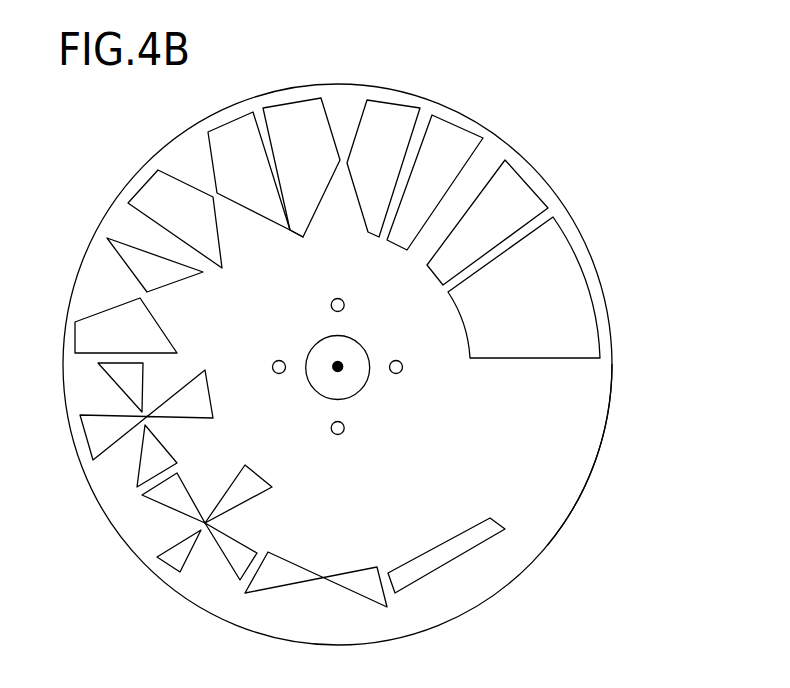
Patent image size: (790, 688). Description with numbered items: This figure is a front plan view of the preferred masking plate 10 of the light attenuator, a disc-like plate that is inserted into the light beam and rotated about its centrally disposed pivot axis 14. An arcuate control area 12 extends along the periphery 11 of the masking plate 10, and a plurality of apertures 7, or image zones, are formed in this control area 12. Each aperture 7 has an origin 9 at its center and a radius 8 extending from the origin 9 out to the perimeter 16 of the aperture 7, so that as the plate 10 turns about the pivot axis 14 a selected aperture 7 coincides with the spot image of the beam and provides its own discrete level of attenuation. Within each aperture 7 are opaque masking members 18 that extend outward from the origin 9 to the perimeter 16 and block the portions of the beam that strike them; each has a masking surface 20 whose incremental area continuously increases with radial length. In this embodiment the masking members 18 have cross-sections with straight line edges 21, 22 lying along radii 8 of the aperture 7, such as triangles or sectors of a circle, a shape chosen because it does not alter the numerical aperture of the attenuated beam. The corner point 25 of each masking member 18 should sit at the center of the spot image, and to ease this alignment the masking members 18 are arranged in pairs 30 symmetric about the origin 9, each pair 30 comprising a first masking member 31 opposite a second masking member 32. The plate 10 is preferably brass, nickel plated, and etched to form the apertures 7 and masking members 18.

The masking plate 10 is at (585, 117).
The arcuate control area 12 is at (603, 432).
The pivot axis 14 is at (339, 368).
The masking surface 20 is at (178, 158).
The masking members 18 is at (245, 202).
The straight line edge 21 is at (328, 120).
The corner point 25 is at (312, 237).
The straight line edge 22 is at (378, 120).
The perimeter 16 is at (405, 200).
The apertures 7 is at (514, 200).
The radius 8 is at (170, 253).
The origin 9 is at (140, 302).
The pairs 30 is at (90, 468).
The second masking member 32 is at (190, 387).
The first masking member 31 is at (143, 460).
The periphery 11 is at (527, 567).